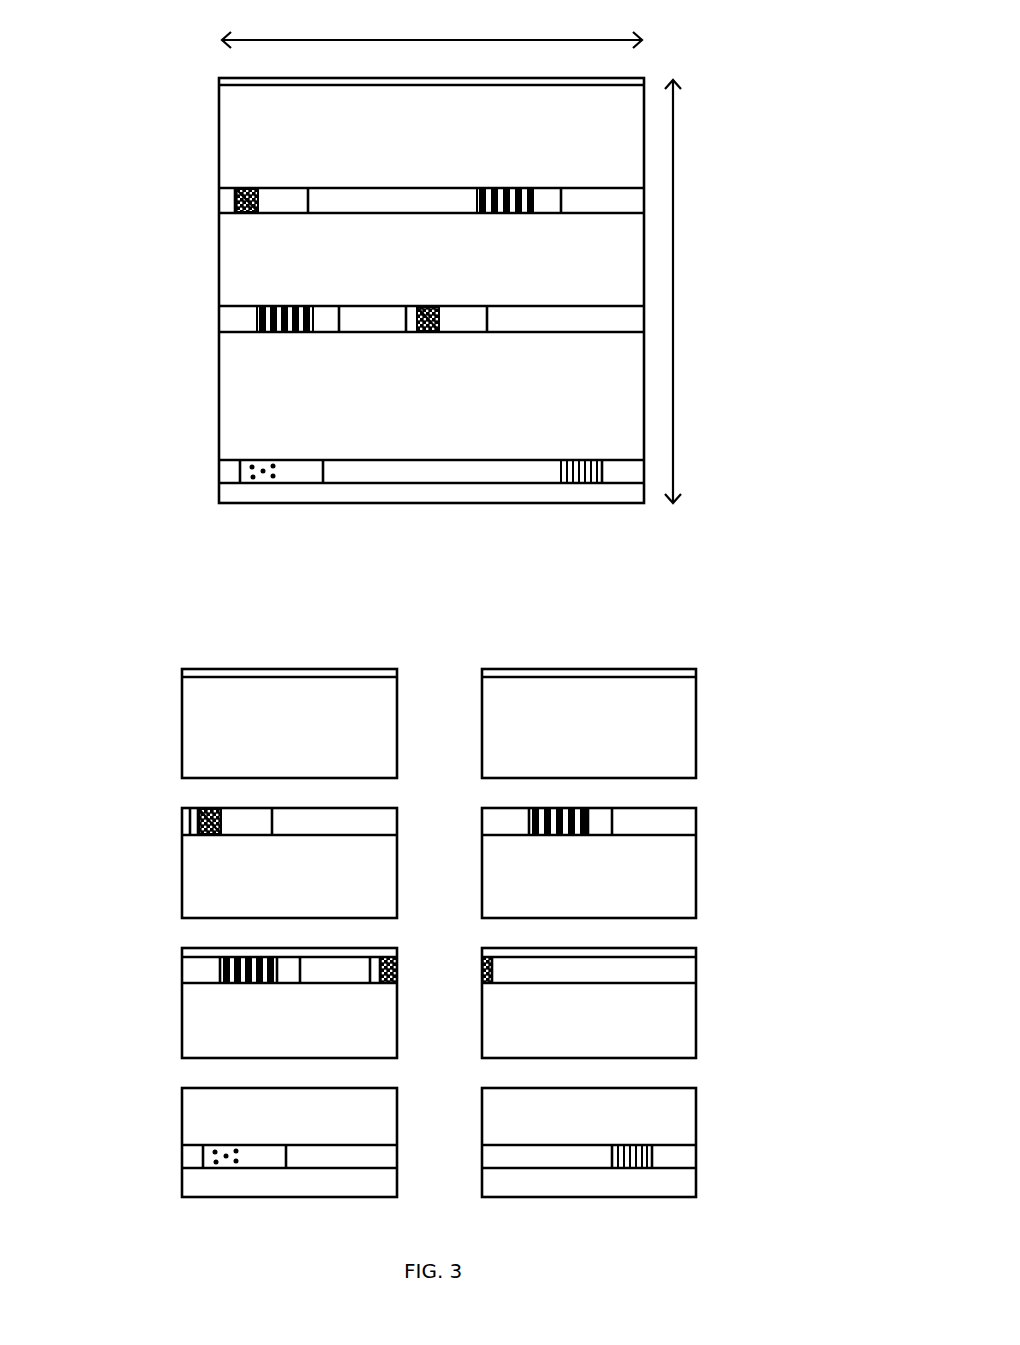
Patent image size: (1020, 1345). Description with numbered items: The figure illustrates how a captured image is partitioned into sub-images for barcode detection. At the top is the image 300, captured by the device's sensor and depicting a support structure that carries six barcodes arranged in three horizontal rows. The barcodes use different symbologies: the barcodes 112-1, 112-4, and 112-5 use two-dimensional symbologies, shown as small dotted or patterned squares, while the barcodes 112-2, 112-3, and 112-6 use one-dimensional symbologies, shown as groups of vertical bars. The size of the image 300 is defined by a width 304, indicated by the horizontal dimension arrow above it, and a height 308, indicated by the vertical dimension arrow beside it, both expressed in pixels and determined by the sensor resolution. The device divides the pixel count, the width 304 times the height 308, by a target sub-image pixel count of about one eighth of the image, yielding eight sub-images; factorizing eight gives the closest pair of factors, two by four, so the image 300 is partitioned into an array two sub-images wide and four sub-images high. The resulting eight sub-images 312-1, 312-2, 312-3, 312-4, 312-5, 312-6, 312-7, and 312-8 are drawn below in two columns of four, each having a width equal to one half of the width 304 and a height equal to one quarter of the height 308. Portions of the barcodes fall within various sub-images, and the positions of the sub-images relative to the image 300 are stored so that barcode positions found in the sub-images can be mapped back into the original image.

The image 300 is at (355, 338).
The width 304 is at (432, 28).
The height 308 is at (693, 291).
The barcode 112-1 is at (228, 200).
The barcode 112-2 is at (512, 188).
The barcode 112-3 is at (253, 318).
The barcode 112-4 is at (421, 306).
The barcode 112-5 is at (264, 483).
The barcode 112-6 is at (590, 483).
The sub-image 312-1 is at (179, 723).
The sub-image 312-2 is at (179, 862).
The sub-image 312-3 is at (179, 999).
The sub-image 312-4 is at (179, 1129).
The sub-image 312-5 is at (699, 722).
The sub-image 312-6 is at (699, 861).
The sub-image 312-7 is at (699, 1000).
The sub-image 312-8 is at (699, 1130).